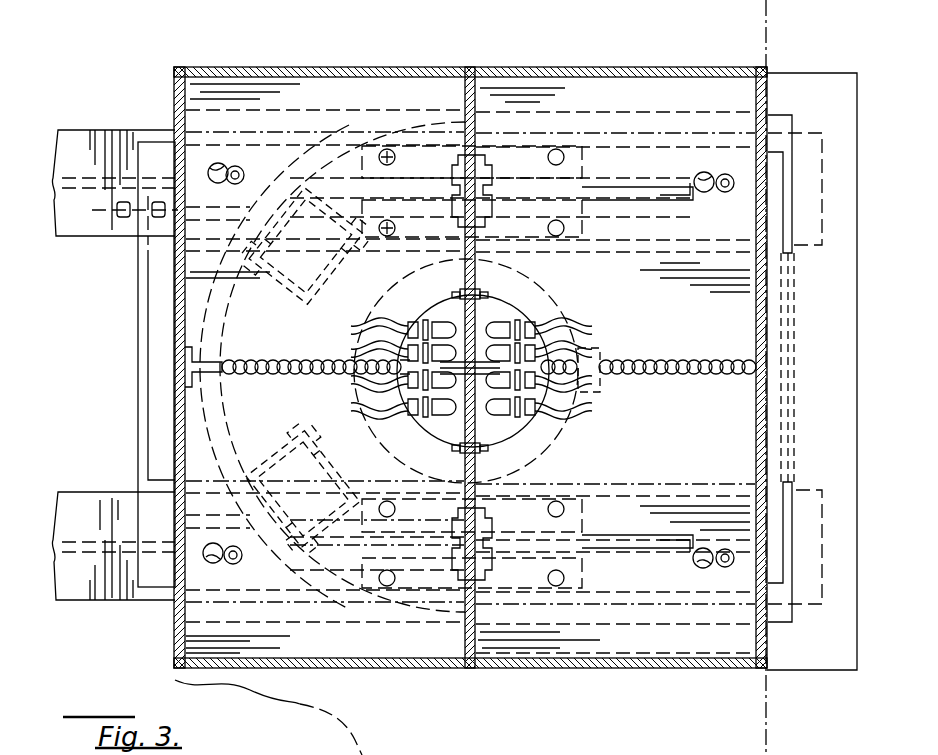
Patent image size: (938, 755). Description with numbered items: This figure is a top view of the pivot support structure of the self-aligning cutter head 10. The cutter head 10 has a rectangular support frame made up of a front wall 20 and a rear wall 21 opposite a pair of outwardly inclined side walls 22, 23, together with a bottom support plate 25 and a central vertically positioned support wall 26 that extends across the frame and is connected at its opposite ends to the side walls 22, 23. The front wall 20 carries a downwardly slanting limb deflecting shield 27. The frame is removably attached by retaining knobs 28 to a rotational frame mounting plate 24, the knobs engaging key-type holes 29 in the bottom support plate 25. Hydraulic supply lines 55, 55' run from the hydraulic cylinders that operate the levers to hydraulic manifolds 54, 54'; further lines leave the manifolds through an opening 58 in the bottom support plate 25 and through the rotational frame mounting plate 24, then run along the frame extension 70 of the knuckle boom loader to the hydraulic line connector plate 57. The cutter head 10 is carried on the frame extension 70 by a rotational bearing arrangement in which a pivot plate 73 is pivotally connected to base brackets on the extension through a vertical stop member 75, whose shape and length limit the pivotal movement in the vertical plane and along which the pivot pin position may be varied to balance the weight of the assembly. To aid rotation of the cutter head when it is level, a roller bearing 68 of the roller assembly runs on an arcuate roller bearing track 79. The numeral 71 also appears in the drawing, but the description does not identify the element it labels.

The self-aligning cutter head 10 is at (160, 60).
The front wall 20 is at (768, 326).
The rear wall 21 is at (178, 310).
The side wall 22 is at (612, 668).
The side wall 23 is at (440, 68).
The rotational frame mounting plate 24 is at (356, 118).
The bottom support plate 25 is at (722, 453).
The central vertically positioned support wall 26 is at (478, 100).
The limb deflecting shield 27 is at (810, 83).
The retaining knobs 28 is at (240, 166).
The key-type holes 29 is at (218, 162).
The hydraulic manifold 54 is at (516, 346).
The hydraulic manifold 54' is at (430, 343).
The hydraulic supply line 55 is at (474, 372).
The hydraulic supply line 55' is at (360, 335).
The hydraulic line connector plate 57 is at (121, 234).
The opening 58 is at (510, 432).
The roller bearing 68 is at (264, 288).
The frame extension 70 is at (84, 136).
The flange 71 is at (134, 394).
The pivot plate 73 is at (232, 470).
The vertical stop member 75 is at (653, 188).
The arcuate roller bearing track 79 is at (230, 422).